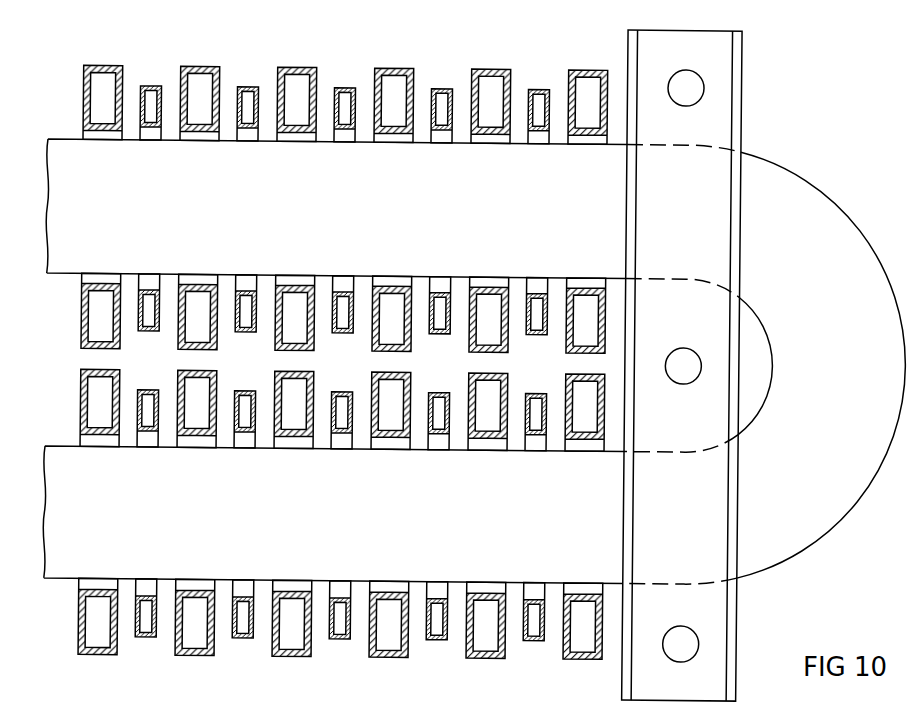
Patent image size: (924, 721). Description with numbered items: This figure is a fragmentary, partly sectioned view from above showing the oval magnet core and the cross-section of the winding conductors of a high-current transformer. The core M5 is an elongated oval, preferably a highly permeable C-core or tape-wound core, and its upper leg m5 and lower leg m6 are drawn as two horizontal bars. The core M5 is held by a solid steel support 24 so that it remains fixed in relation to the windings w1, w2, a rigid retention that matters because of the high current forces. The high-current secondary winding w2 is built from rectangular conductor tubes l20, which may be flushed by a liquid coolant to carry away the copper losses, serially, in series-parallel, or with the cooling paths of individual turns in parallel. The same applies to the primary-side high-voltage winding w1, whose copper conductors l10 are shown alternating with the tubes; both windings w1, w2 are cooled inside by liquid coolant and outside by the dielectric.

The solid steel support 24 is at (738, 90).
The copper conductors of the high-voltage winding l10 is at (341, 85).
The rectangular conductor tubes l20 is at (391, 67).
The high-voltage winding w1 is at (542, 88).
The secondary winding w2 is at (488, 68).
The upper leg m5 is at (249, 211).
The oval core M5 is at (498, 212).
The lower leg m6 is at (246, 517).